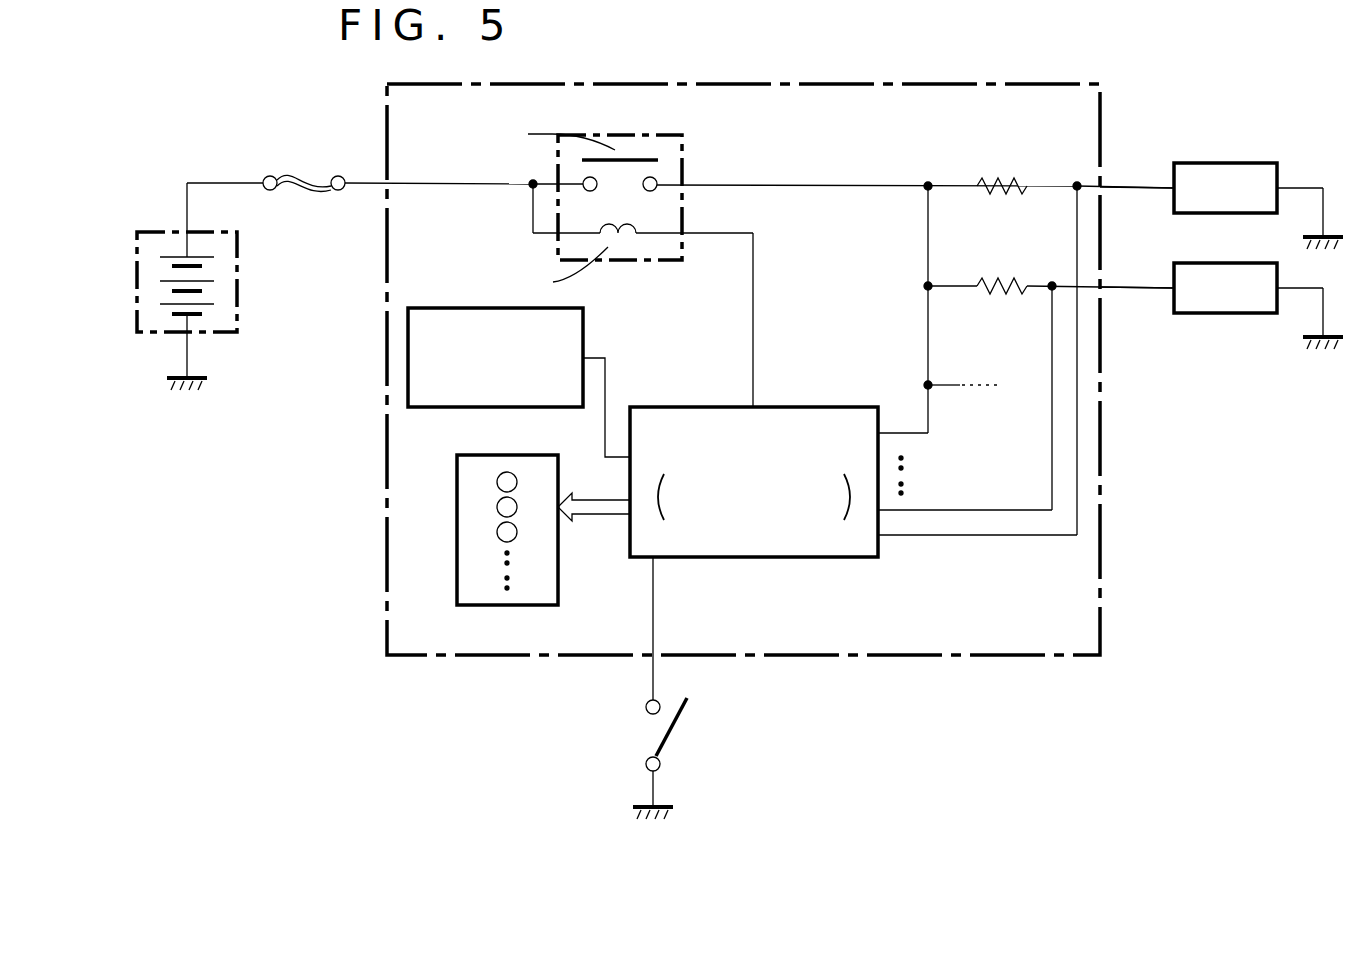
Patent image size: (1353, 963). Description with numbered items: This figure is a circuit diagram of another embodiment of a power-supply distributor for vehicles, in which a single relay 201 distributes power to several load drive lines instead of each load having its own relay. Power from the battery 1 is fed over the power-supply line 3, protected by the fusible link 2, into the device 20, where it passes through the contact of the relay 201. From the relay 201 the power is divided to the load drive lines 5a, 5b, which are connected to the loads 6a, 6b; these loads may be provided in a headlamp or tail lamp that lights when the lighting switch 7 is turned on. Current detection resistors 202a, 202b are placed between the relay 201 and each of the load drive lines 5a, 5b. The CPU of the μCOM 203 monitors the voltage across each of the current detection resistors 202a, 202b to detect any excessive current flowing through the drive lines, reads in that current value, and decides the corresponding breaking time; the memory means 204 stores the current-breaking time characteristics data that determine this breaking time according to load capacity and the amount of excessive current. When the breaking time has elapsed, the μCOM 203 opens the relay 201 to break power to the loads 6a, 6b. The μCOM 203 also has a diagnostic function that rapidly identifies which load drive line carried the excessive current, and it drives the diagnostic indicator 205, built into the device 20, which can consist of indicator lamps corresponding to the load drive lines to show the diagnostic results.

The battery 1 is at (238, 298).
The fusible link 2 is at (292, 167).
The power-supply line 3 is at (368, 183).
The load drive line 5a is at (1120, 188).
The load drive line 5b is at (1120, 288).
The load 6a is at (1197, 163).
The load 6b is at (1197, 263).
The lighting switch 7 is at (653, 727).
The device 20 is at (683, 84).
The relay 201 is at (620, 135).
The current detection resistor 202a is at (1007, 178).
The current detection resistor 202b is at (1010, 275).
The μCOM 203 is at (760, 557).
The memory means 204 is at (585, 325).
The diagnostic indicator 205 is at (507, 455).